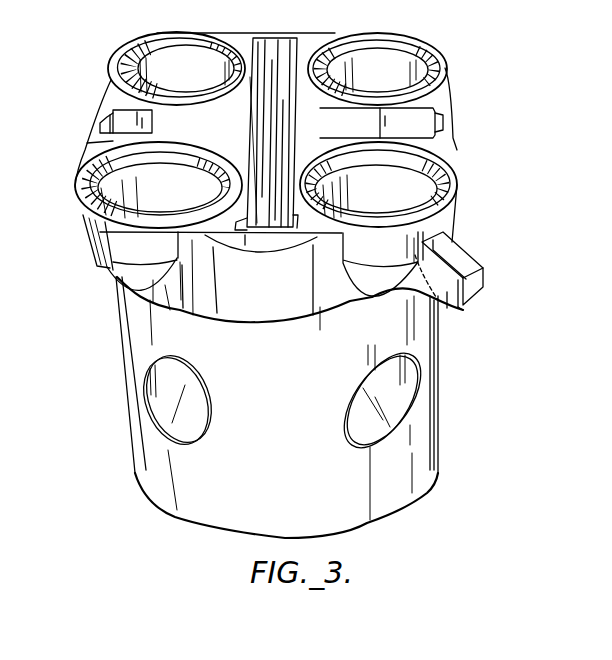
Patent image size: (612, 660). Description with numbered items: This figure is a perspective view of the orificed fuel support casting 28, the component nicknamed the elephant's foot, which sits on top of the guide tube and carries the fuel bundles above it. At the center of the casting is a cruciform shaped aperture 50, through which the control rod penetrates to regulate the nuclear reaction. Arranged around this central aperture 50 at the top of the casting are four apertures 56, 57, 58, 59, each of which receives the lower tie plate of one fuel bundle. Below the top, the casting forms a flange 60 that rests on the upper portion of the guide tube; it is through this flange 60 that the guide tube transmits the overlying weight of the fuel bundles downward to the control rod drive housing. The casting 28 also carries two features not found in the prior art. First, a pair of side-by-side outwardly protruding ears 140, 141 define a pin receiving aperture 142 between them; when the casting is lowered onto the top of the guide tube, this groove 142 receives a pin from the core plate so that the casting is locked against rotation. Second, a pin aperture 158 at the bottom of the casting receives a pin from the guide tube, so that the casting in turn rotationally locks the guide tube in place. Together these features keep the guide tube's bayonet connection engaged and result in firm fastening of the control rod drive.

The orificed fuel support casting 28 is at (458, 103).
The central cruciformed shaped aperture 50 is at (256, 83).
The aperture 56 is at (457, 150).
The aperture 57 is at (84, 181).
The aperture 58 is at (143, 56).
The aperture 59 is at (370, 40).
The flange 60 is at (168, 312).
The ear 140 is at (485, 306).
The ear 141 is at (470, 312).
The pin receiving aperture 142 is at (449, 257).
The pin aperture 158 is at (438, 300).